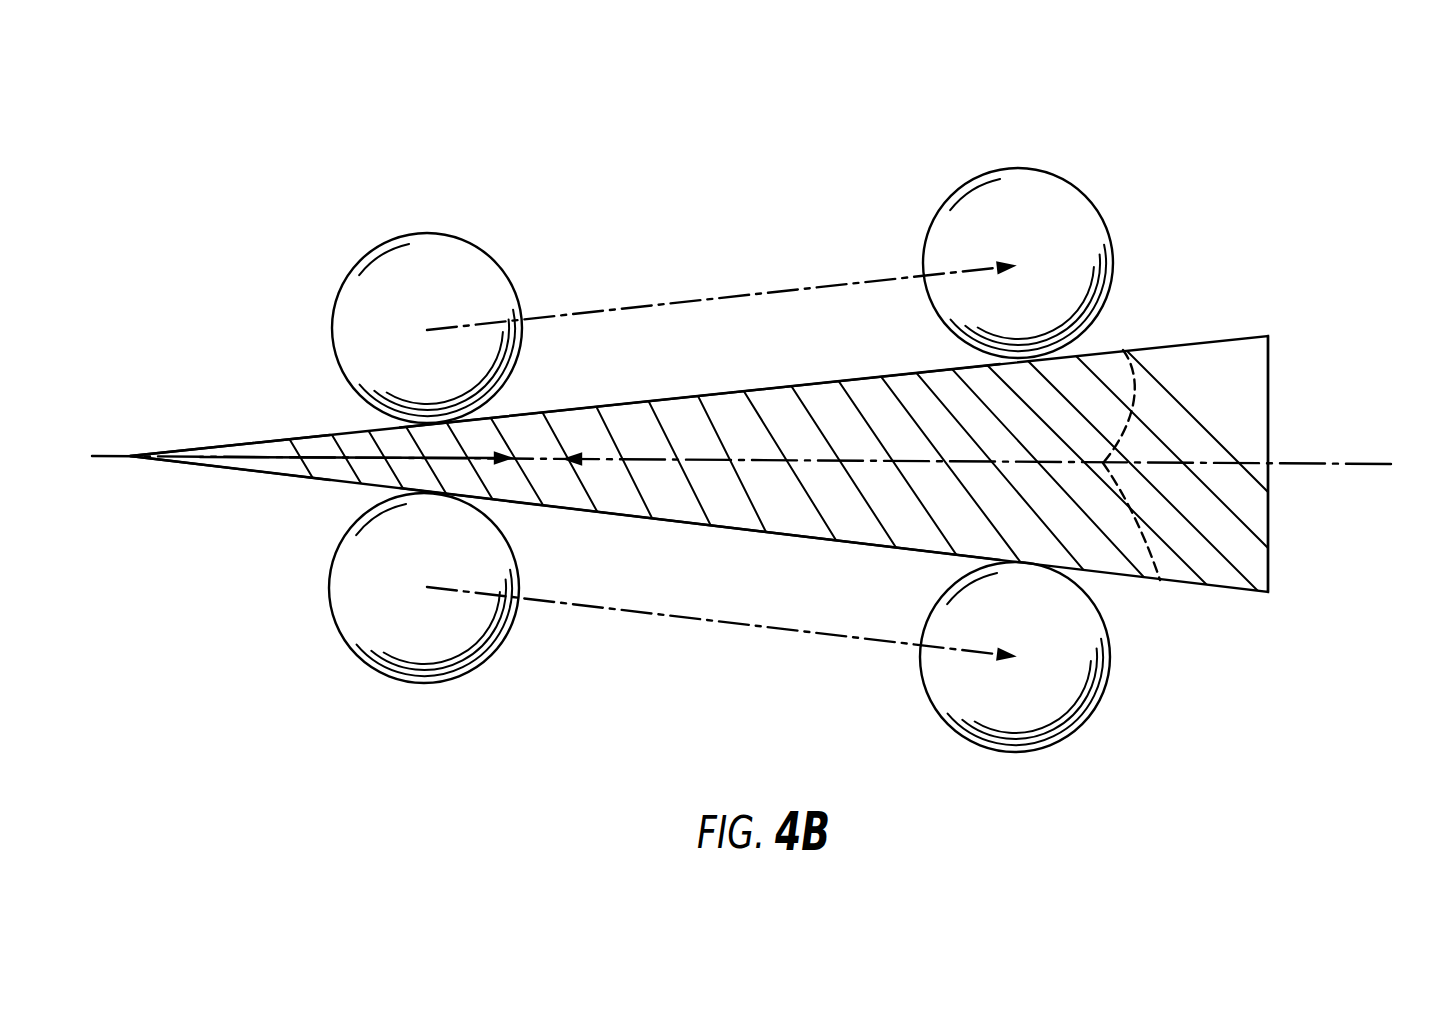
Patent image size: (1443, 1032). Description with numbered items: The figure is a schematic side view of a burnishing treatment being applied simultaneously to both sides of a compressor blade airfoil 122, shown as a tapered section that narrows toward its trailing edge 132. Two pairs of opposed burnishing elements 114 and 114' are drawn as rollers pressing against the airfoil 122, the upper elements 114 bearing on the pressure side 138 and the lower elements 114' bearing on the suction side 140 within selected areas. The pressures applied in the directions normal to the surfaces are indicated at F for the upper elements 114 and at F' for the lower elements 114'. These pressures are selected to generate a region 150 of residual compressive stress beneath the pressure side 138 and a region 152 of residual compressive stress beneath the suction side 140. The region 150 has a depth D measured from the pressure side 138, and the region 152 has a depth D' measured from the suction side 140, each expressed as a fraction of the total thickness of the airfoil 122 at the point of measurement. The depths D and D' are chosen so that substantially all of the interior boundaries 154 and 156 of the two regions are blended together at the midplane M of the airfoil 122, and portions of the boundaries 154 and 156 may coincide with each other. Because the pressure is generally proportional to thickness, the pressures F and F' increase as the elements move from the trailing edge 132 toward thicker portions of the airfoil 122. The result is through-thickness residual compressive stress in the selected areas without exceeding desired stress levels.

The burnishing element 114 is at (733, 273).
The opposed burnishing element 114' is at (685, 654).
The airfoil 122 is at (1258, 386).
The trailing edge 132 is at (130, 455).
The pressure side 138 is at (1268, 336).
The suction side 140 is at (1245, 594).
The region of residual compressive stress 150 is at (671, 425).
The region of residual compressive stress 152 is at (762, 505).
The interior boundary 154 is at (1123, 350).
The interior boundary 156 is at (1155, 550).
The applied pressure F is at (674, 139).
The applied pressure F' is at (692, 786).
The depth D is at (823, 408).
The depth D' is at (854, 506).
The midplane M is at (1311, 478).